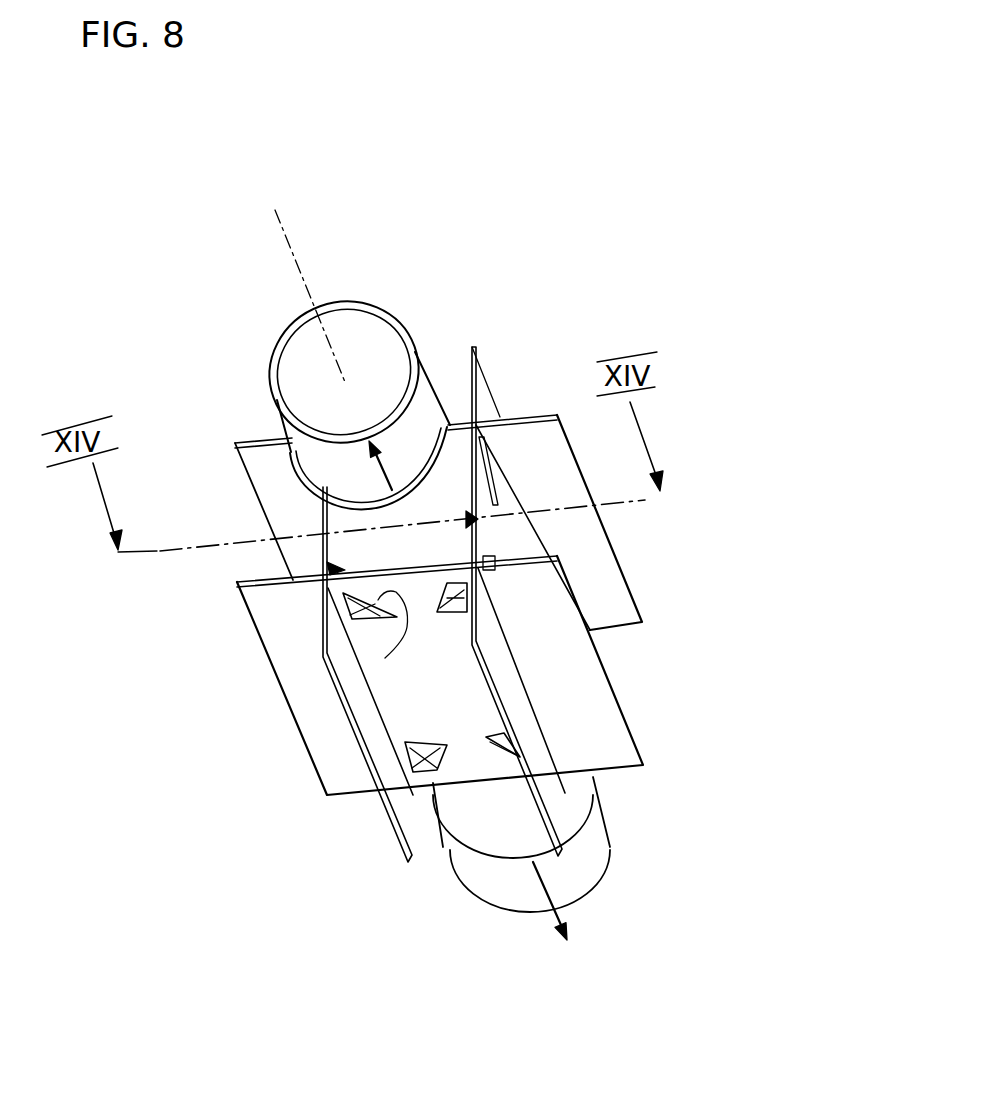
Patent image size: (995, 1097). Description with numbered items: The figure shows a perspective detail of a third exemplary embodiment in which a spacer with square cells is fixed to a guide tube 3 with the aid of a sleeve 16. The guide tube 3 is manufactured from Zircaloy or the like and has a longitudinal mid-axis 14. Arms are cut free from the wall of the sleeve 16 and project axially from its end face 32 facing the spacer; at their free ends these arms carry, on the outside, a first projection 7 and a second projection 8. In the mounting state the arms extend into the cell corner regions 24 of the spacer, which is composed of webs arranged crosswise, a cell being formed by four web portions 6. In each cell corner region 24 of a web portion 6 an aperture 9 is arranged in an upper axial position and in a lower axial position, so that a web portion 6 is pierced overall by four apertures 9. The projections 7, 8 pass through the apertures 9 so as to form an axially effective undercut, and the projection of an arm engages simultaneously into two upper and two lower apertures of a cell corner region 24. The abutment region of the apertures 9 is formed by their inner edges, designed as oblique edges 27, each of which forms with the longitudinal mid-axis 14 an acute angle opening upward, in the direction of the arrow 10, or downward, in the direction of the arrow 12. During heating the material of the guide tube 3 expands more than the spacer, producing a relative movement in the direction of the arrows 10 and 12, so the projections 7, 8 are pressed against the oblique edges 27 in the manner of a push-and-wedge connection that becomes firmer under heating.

The guide tube 3 is at (360, 307).
The web portion 6 is at (500, 538).
The first projection 7 is at (478, 600).
The second projection 8 is at (435, 790).
The aperture 9 is at (490, 744).
The arrow 10 is at (392, 470).
The arrow 12 is at (553, 877).
The longitudinal mid-axis 14 is at (288, 232).
The sleeve 16 is at (468, 425).
The cell corner region 24 is at (475, 518).
The oblique edge 27 is at (455, 776).
The end face 32 is at (322, 565).